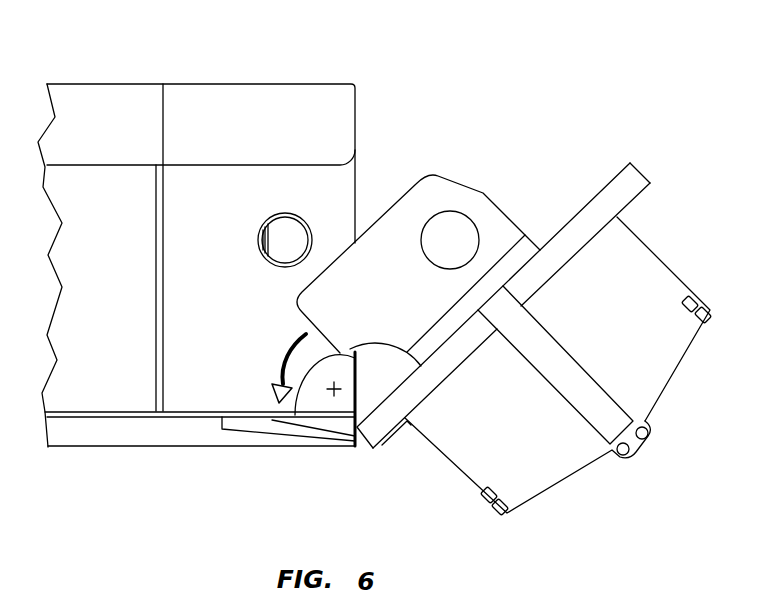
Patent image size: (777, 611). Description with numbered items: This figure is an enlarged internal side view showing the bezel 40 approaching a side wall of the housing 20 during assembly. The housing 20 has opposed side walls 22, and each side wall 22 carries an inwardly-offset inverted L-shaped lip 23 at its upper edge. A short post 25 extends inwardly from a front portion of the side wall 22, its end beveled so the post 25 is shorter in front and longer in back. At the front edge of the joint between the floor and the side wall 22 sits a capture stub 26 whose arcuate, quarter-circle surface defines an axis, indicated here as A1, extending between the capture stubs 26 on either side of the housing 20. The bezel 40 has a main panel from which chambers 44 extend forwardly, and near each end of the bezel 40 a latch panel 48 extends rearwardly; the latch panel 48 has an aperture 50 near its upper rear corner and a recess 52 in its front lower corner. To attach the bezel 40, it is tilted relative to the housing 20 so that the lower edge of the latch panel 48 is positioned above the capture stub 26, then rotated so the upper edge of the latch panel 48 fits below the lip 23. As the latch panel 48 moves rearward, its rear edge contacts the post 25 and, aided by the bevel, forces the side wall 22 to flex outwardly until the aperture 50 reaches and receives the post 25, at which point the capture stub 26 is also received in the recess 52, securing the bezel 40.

The housing 20 is at (193, 273).
The side wall 22 is at (122, 393).
The lip 23 is at (242, 127).
The post 25 is at (291, 240).
The capture stub 26 is at (333, 401).
The bezel 40 is at (549, 212).
The chamber 44 is at (658, 363).
The latch panel 48 is at (418, 237).
The aperture 50 is at (462, 232).
The recess 52 is at (377, 344).
The pivot axis A1 is at (334, 400).